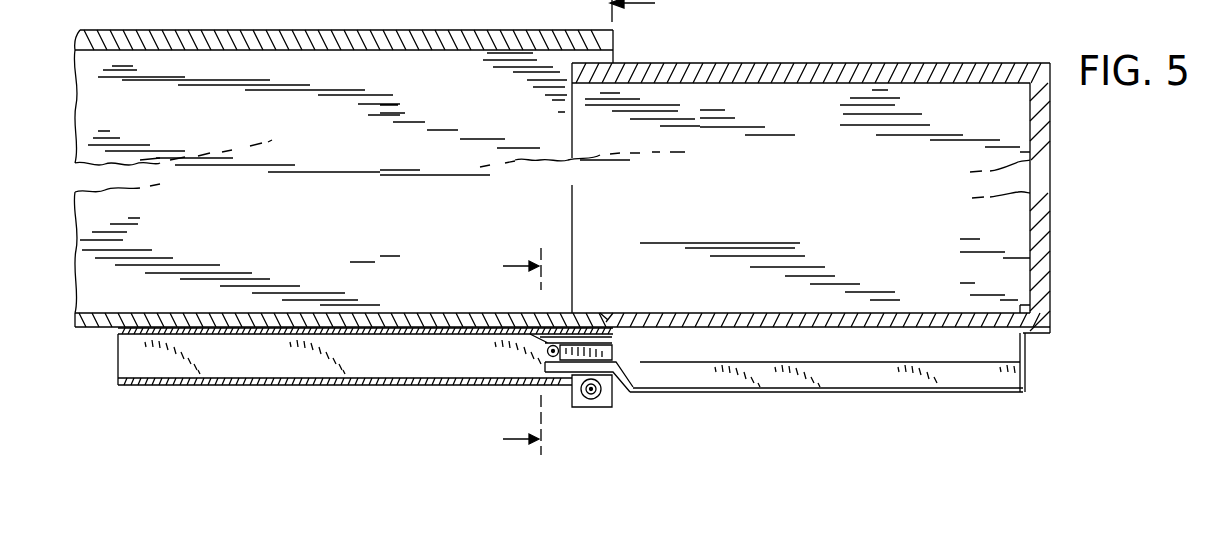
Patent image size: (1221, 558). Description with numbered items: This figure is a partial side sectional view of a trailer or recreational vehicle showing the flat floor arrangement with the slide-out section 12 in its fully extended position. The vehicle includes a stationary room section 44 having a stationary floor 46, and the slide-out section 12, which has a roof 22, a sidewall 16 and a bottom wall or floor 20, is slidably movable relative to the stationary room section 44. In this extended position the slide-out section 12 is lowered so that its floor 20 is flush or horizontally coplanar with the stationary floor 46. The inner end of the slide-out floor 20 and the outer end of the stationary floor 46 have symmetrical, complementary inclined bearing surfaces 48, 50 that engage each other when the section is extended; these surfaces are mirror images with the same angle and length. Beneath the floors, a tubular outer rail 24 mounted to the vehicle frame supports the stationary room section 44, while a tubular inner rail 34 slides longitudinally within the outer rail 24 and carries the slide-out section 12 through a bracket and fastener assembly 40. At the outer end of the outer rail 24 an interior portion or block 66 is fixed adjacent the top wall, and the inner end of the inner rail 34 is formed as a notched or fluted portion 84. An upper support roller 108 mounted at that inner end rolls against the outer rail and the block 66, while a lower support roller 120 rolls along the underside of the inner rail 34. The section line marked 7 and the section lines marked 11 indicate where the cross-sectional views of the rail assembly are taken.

The stationary room section 44 is at (421, 29).
The section line 7 is at (642, 11).
The slide-out section 12 is at (821, 63).
The roof 22 is at (928, 62).
The sidewall 16 is at (1042, 278).
The bottom wall or floor 20 is at (876, 310).
The inclined bearing surface 50 is at (600, 318).
The stationary floor 46 is at (380, 322).
The outer rail 24 is at (398, 362).
The inclined bearing surface 48 is at (595, 327).
The interior portion or block 66 is at (612, 338).
The upper support roller 108 is at (547, 352).
The notched or fluted portion 84 is at (623, 368).
The inner rail 34 is at (821, 374).
The bracket and fastener assembly 40 is at (1026, 358).
The lower support roller 120 is at (589, 408).
The section line 11 is at (507, 351).